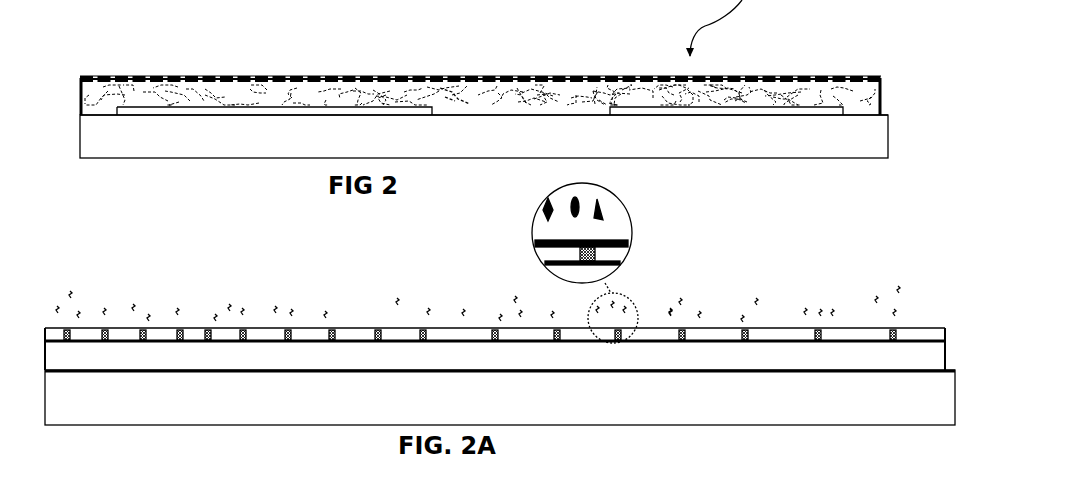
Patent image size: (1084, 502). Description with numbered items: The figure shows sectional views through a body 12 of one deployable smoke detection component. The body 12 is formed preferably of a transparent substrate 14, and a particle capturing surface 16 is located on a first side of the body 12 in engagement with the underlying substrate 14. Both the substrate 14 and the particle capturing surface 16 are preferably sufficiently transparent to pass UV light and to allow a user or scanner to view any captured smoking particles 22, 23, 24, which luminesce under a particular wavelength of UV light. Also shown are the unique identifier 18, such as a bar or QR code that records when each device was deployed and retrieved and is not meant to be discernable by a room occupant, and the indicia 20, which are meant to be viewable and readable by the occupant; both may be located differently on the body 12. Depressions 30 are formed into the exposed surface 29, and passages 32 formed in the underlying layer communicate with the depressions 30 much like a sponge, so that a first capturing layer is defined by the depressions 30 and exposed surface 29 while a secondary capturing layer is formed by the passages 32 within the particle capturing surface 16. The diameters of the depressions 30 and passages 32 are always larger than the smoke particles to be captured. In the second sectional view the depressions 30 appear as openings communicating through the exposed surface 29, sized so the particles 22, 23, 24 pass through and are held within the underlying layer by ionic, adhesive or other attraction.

In FIG. 2, the body 12 is at (883, 113).
In FIG. 2, the substrate 14 is at (212, 143).
In FIG. 2A, the substrate 14 is at (890, 402).
In FIG. 2, the particle capturing surface 16 is at (328, 78).
In FIG. 2A, the particle capturing surface 16 is at (923, 357).
In FIG. 2, the unique identifier 18 is at (181, 112).
In FIG. 2, the indicia 20 is at (770, 110).
In FIG. 2A, the smoking particle 22 is at (538, 215).
In FIG. 2A, the smoking particle 23 is at (602, 212).
In FIG. 2A, the smoking particle 24 is at (580, 197).
In FIG. 2, the exposed surface 29 is at (193, 79).
In FIG. 2, the depressions 30 is at (252, 78).
In FIG. 2A, the depressions 30 is at (577, 250).
In FIG. 2, the passages 32 is at (450, 85).